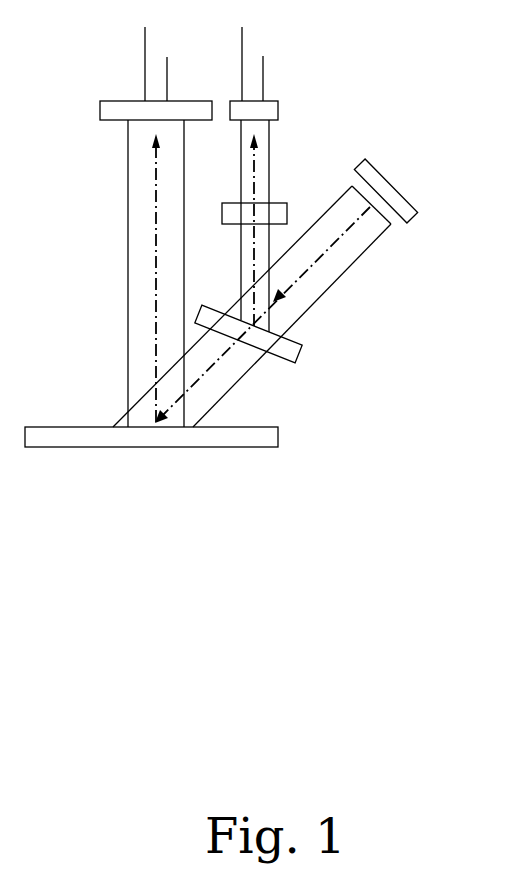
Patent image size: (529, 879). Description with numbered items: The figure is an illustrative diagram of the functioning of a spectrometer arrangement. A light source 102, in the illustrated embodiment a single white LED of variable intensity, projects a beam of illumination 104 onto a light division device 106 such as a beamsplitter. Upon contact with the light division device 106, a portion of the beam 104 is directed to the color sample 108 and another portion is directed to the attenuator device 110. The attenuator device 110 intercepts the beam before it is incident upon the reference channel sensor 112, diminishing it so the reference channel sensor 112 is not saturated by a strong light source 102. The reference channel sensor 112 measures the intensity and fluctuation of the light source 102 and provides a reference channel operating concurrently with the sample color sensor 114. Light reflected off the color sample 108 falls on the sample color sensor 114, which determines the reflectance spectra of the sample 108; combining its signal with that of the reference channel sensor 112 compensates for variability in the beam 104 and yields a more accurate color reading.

The light source 102 is at (407, 198).
The beam of illumination 104 is at (357, 262).
The light division device 106 is at (300, 357).
The color sample 108 is at (230, 447).
The attenuator device 110 is at (286, 204).
The reference channel sensor 112 is at (268, 98).
The sample color sensor 114 is at (120, 100).